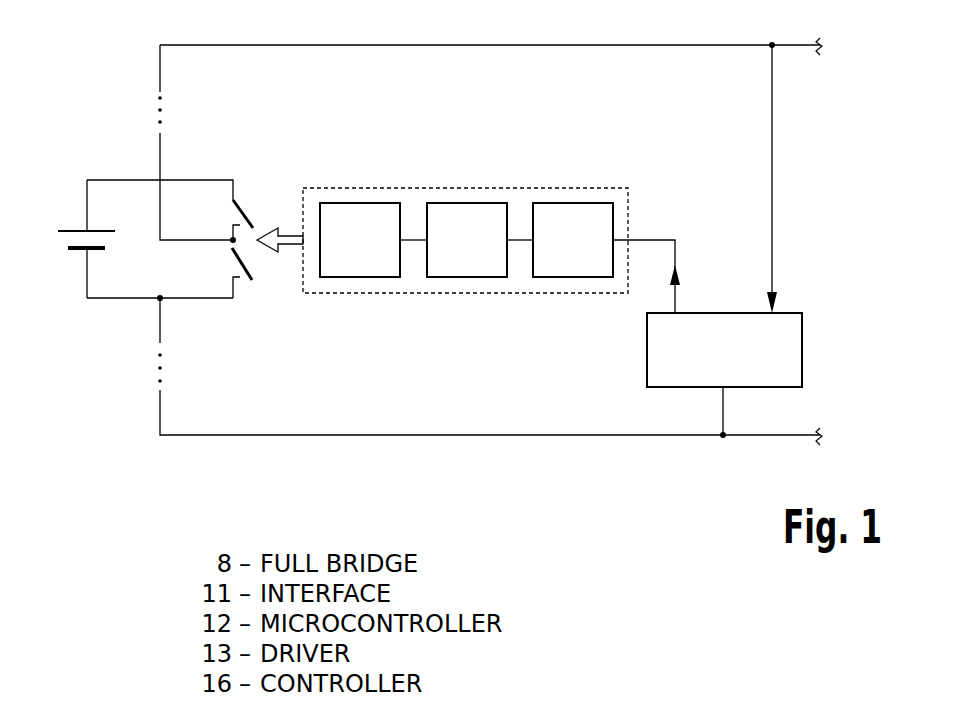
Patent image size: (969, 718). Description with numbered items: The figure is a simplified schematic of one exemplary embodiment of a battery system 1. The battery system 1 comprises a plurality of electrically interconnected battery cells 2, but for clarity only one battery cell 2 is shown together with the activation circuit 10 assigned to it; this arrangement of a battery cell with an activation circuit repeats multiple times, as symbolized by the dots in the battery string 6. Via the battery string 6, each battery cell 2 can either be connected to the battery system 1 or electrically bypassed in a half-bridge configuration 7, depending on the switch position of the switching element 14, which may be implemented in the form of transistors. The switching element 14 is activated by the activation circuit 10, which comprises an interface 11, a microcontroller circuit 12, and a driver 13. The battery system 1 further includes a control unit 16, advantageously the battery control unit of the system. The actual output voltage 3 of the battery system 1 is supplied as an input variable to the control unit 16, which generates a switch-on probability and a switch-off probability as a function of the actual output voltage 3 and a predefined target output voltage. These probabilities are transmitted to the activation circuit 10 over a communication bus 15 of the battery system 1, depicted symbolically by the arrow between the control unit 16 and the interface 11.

The battery system 1 is at (85, 83).
The battery cell 2 is at (72, 230).
The actual output voltage 3 is at (772, 177).
The battery string 6 is at (160, 412).
The half-bridge configuration 7 is at (192, 320).
The activation circuit 10 is at (463, 188).
The interface 11 is at (556, 256).
The microcontroller circuit 12 is at (450, 256).
The driver 13 is at (343, 256).
The switching element 14 is at (266, 289).
The communication bus 15 is at (675, 255).
The control unit 16 is at (740, 365).